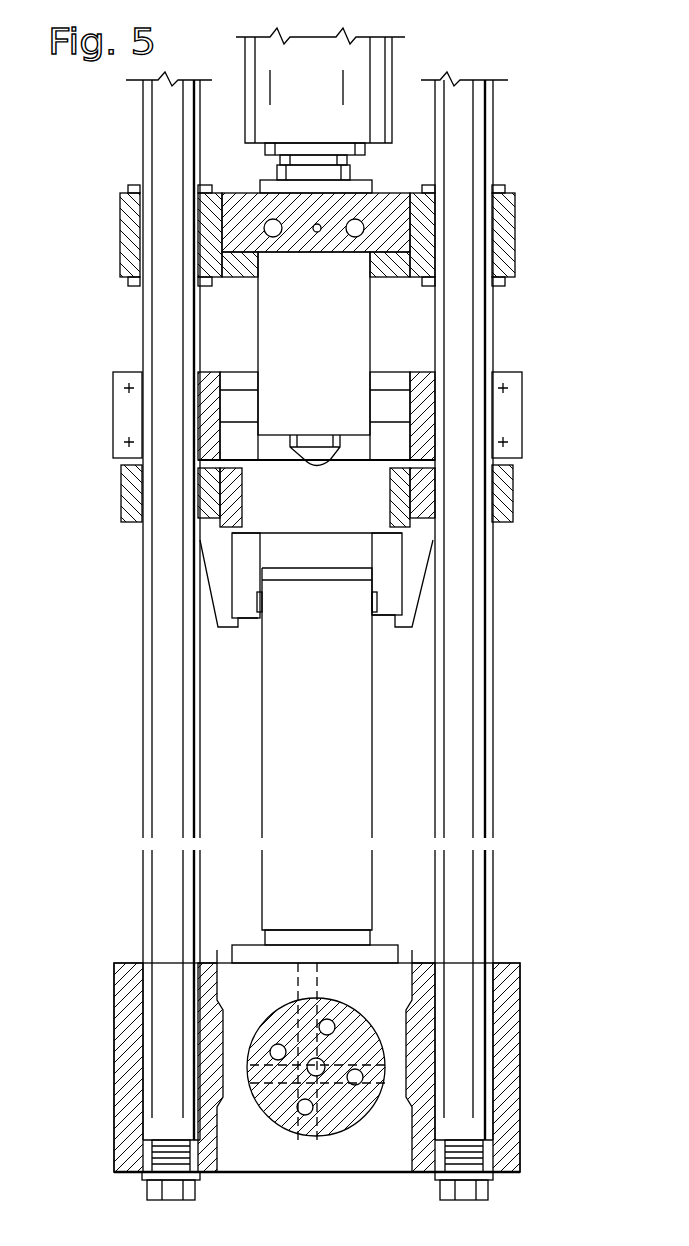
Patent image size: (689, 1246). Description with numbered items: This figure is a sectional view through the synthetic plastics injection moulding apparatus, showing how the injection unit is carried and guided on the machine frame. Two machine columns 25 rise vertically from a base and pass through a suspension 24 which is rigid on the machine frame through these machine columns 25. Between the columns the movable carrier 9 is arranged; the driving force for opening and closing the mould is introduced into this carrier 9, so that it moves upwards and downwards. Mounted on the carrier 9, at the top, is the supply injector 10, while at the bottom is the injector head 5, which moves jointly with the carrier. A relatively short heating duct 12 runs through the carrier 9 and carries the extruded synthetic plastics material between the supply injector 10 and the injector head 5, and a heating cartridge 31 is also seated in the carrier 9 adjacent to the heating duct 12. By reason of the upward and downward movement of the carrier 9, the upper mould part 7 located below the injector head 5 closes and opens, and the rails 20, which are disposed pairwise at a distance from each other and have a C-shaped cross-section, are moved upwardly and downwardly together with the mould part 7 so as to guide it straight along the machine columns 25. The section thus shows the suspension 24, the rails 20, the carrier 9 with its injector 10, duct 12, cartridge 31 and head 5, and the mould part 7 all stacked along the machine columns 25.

The injector head 5 is at (355, 330).
The mould part 7 is at (258, 553).
The movable carrier 9 is at (380, 198).
The supply injector 10 is at (307, 55).
The heating duct 12 is at (314, 226).
The rail 20 is at (122, 486).
The suspension 24 is at (234, 405).
The machine column 25 is at (176, 702).
The heating cartridge 31 is at (271, 225).